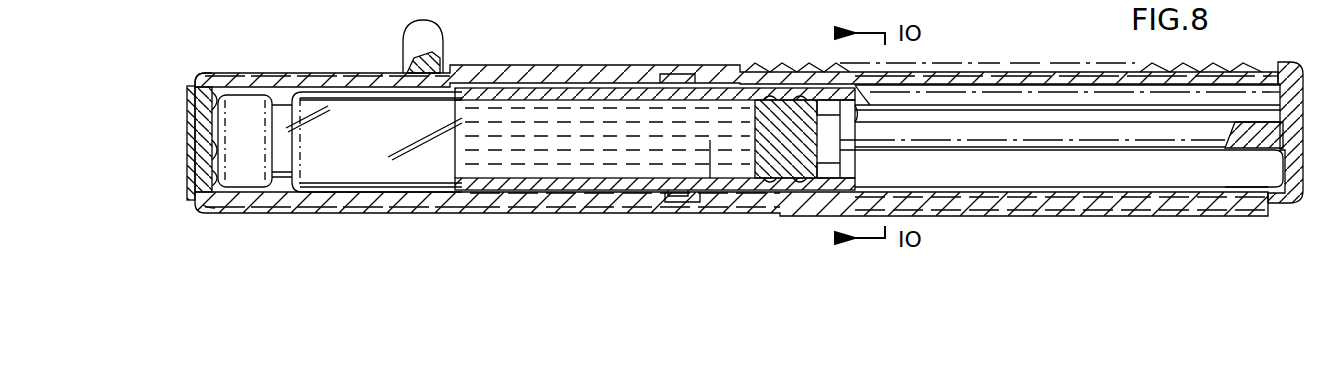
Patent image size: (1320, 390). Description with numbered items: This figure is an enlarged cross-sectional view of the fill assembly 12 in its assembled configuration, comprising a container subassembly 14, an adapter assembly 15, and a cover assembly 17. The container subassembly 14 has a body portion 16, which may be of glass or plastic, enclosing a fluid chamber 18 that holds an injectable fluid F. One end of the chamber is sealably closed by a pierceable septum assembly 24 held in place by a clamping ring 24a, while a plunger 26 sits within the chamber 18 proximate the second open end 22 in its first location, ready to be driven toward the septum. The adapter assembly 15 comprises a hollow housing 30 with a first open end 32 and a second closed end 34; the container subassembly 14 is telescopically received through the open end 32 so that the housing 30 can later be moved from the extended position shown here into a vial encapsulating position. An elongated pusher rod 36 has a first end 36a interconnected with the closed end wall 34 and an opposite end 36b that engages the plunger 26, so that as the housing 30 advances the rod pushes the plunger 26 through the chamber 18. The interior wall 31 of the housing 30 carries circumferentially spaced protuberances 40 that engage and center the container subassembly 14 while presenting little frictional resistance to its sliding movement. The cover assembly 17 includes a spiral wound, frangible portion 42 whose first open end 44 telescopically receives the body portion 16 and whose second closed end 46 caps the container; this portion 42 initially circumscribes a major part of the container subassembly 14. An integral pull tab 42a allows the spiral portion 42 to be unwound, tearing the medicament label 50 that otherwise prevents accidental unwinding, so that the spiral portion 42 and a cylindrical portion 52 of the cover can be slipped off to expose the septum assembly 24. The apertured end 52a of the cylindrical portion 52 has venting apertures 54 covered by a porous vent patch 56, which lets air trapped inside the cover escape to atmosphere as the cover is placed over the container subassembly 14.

The fill assembly 12 is at (547, 62).
The container subassembly 14 is at (430, 178).
The adapter assembly 15 is at (965, 78).
The body portion 16 is at (582, 90).
The cover assembly 17 is at (368, 72).
The fluid chamber 18 is at (500, 115).
The second open end 22 is at (870, 105).
The pierceable septum assembly 24 is at (200, 145).
The clamping ring 24a is at (252, 107).
The plunger 26 is at (765, 115).
The hollow housing 30 is at (987, 39).
The interior wall 31 is at (1130, 197).
The first open end 32 is at (682, 192).
The second closed end 34 is at (1298, 205).
The pusher rod 36 is at (968, 150).
The first end 36a is at (1245, 150).
The opposite end 36b is at (858, 150).
The protuberances 40 is at (1080, 105).
The spiral wound, frangible portion 42 is at (650, 205).
The pull tab 42a is at (405, 34).
The first open end 44 is at (690, 76).
The second closed end 46 is at (186, 108).
The medicament label 50 is at (585, 212).
The cylindrical portion 52 is at (335, 213).
The apertured end 52a is at (200, 206).
The venting apertures 54 is at (215, 97).
The porous vent patch 56 is at (200, 172).
The injectable fluid F is at (712, 178).